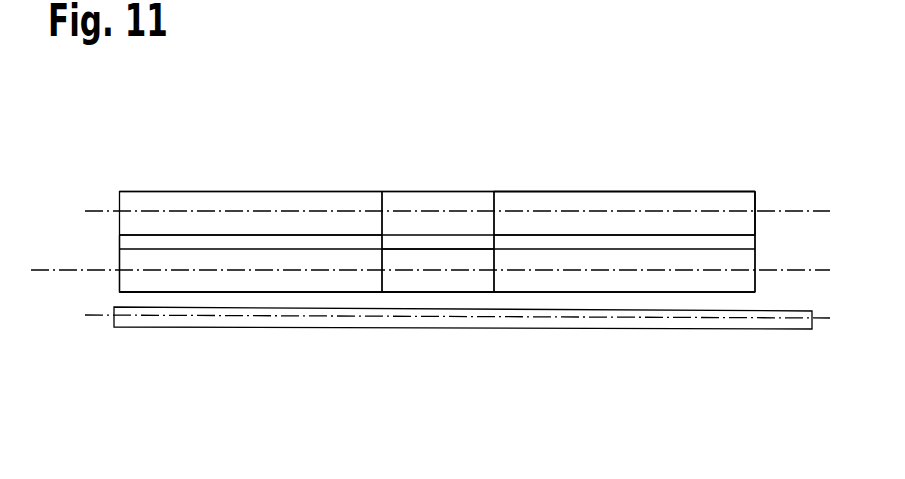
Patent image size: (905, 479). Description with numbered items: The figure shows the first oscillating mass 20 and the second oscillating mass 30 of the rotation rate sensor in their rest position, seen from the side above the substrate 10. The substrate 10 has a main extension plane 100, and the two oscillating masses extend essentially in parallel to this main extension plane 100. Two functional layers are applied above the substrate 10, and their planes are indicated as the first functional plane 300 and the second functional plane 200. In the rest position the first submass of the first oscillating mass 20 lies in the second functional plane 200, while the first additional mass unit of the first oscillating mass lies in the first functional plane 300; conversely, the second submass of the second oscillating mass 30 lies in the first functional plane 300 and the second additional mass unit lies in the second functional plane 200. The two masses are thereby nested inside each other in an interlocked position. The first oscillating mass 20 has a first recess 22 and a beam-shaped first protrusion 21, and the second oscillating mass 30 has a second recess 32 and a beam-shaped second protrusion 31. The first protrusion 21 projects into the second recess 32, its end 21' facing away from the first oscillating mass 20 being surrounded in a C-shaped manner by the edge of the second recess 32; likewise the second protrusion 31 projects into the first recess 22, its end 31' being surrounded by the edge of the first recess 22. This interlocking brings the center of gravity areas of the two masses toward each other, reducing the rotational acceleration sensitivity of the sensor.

The substrate 10 is at (733, 322).
The first oscillating mass 20 is at (438, 244).
The first protrusion 21 is at (438, 202).
The end of first protrusion 21' is at (624, 202).
The first recess 22 is at (212, 297).
The second oscillating mass 30 is at (529, 295).
The second protrusion 31 is at (438, 331).
The end of second protrusion 31' is at (251, 263).
The second recess 32 is at (624, 214).
The main extension plane 100 is at (820, 318).
The second functional plane 200 is at (817, 212).
The first functional plane 300 is at (65, 268).